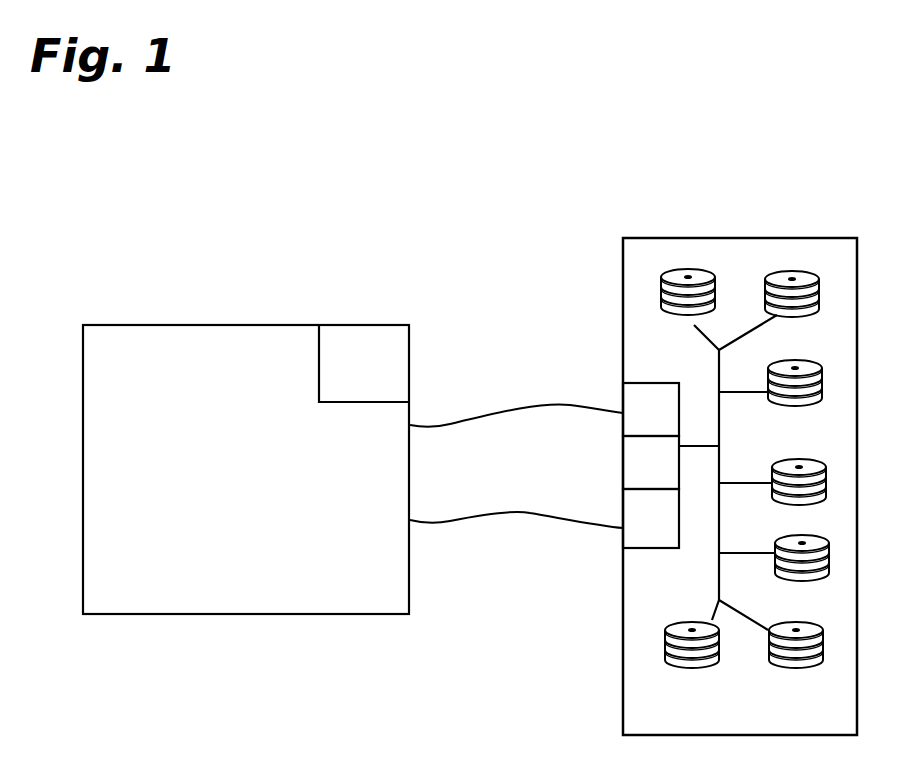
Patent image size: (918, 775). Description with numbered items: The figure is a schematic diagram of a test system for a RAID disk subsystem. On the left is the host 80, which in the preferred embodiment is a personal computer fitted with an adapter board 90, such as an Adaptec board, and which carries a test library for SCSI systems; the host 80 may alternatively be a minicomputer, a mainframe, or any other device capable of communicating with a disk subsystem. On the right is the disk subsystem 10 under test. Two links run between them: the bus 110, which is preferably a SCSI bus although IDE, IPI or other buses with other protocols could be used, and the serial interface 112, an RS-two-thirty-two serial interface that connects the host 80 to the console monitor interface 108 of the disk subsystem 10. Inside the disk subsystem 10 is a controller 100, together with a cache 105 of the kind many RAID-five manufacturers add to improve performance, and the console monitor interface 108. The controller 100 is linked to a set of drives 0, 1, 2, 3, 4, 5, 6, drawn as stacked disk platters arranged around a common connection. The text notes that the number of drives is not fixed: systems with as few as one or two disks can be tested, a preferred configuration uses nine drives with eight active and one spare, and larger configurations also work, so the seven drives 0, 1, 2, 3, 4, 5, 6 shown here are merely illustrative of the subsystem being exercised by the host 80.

The disk subsystem 10 is at (748, 225).
The host 80 is at (249, 317).
The adapter board 90 is at (383, 316).
The controller 100 is at (651, 409).
The cache 105 is at (671, 462).
The console monitor interface 108 is at (651, 518).
The bus 110 is at (495, 402).
The serial interface 112 is at (552, 525).
The drive 0 is at (662, 292).
The drive 1 is at (825, 290).
The drive 2 is at (832, 377).
The drive 3 is at (833, 478).
The drive 4 is at (830, 563).
The drive 5 is at (793, 678).
The drive 6 is at (715, 670).